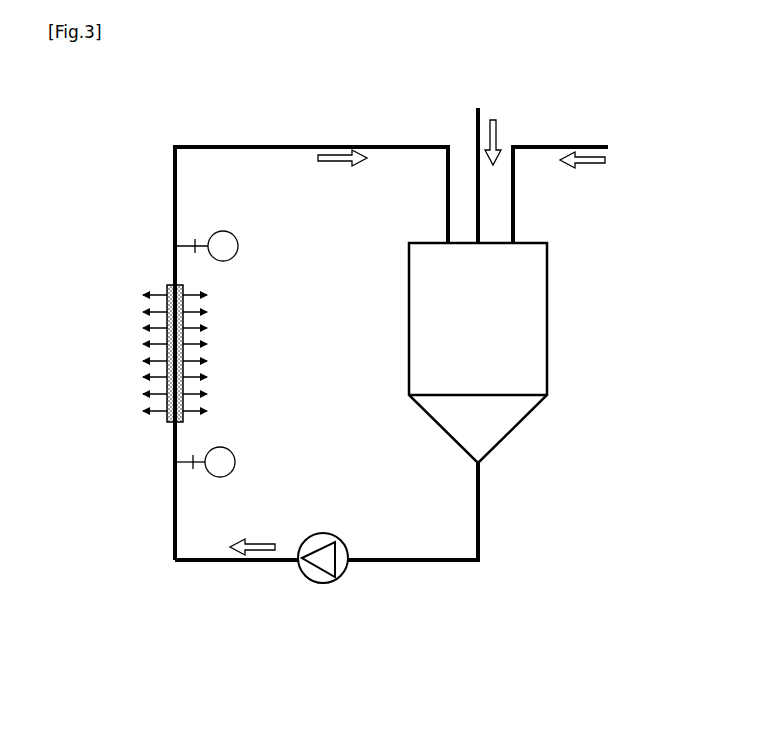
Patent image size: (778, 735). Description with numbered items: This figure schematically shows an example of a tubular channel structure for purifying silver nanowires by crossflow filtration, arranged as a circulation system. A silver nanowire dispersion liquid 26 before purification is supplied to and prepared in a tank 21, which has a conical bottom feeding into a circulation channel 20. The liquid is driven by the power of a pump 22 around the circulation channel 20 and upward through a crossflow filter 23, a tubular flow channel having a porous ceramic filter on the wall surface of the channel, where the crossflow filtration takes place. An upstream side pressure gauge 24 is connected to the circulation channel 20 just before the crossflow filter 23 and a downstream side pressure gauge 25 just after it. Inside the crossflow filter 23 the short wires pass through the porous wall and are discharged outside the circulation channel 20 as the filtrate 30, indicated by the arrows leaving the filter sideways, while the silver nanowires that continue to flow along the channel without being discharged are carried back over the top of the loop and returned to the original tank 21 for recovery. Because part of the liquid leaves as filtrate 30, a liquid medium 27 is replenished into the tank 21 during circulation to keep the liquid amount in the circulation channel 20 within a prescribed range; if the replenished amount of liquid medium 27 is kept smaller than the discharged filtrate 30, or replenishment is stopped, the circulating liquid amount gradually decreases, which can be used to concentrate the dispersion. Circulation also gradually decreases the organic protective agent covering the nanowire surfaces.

The circulation channel 20 is at (480, 525).
The tank 21 is at (548, 312).
The pump 22 is at (323, 583).
The crossflow filter 23 is at (167, 292).
The upstream side pressure gauge 24 is at (235, 455).
The downstream side pressure gauge 25 is at (238, 243).
The silver nanowire dispersion liquid before crossflow purification 26 is at (581, 191).
The liquid medium to be replenished 27 is at (483, 161).
The filtrate 30 is at (206, 360).